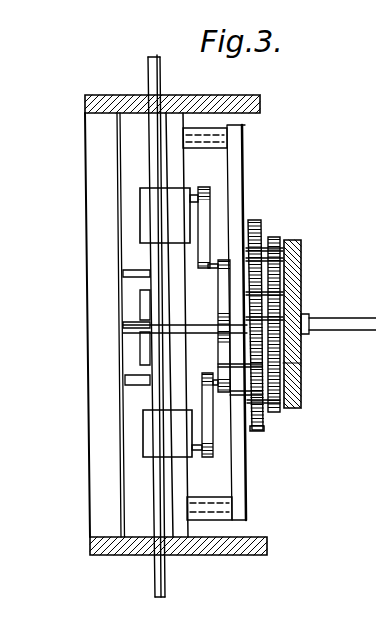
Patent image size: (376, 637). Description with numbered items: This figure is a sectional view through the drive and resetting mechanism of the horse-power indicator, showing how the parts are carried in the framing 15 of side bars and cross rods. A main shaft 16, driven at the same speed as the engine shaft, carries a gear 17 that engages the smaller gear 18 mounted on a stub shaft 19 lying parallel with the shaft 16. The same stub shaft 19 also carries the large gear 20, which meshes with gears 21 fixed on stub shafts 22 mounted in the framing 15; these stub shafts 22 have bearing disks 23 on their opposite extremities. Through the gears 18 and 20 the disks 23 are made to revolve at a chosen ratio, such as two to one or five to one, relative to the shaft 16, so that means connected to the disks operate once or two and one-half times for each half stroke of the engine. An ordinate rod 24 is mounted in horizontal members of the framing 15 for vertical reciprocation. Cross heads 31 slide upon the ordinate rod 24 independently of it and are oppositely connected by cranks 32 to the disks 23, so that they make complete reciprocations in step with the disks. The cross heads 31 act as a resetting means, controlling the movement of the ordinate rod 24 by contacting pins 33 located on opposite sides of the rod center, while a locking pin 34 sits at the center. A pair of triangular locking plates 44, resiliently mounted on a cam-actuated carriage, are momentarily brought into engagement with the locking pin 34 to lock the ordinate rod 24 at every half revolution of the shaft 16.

The framing 15 is at (240, 163).
The shaft 16 is at (302, 342).
The gear 17 is at (281, 237).
The smaller gear 18 is at (303, 316).
The stub shaft 19 is at (339, 333).
The large gear 20 is at (258, 432).
The gears 21 is at (281, 263).
The stub shafts 22 is at (276, 278).
The bearing disks 23 is at (245, 293).
The ordinate rod 24 is at (157, 474).
The cross heads 31 is at (162, 217).
The cranks 32 is at (205, 222).
The pins 33 is at (128, 266).
The locking pin 34 is at (123, 326).
The triangular locking plates 44 is at (145, 344).